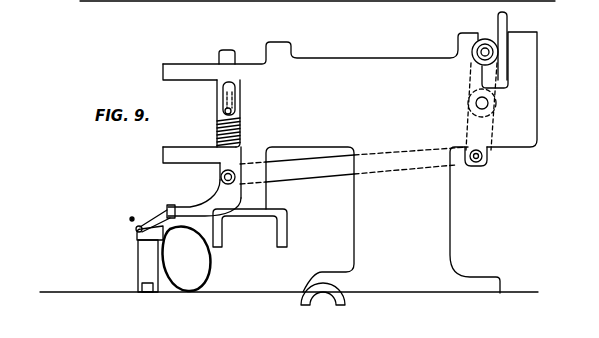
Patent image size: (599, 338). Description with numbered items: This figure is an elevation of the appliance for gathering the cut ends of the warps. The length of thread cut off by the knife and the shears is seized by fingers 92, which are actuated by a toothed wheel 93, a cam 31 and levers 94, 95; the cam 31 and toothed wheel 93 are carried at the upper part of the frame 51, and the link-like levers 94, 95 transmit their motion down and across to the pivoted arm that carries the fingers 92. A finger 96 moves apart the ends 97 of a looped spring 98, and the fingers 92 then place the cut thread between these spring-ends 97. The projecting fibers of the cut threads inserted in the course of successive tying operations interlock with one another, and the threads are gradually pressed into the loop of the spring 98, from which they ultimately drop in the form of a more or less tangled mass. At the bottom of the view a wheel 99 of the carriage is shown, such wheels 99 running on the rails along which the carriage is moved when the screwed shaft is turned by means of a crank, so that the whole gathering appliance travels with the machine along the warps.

The cam 31 is at (497, 45).
The frame standard 51 is at (443, 252).
The fingers 92 is at (168, 212).
The toothed wheel 93 is at (500, 53).
The lever 94 is at (483, 132).
The lever 95 is at (335, 172).
The finger 96 is at (139, 227).
The ends of looped spring 97 is at (131, 219).
The looped spring 98 is at (210, 277).
The wheels 99 is at (304, 291).